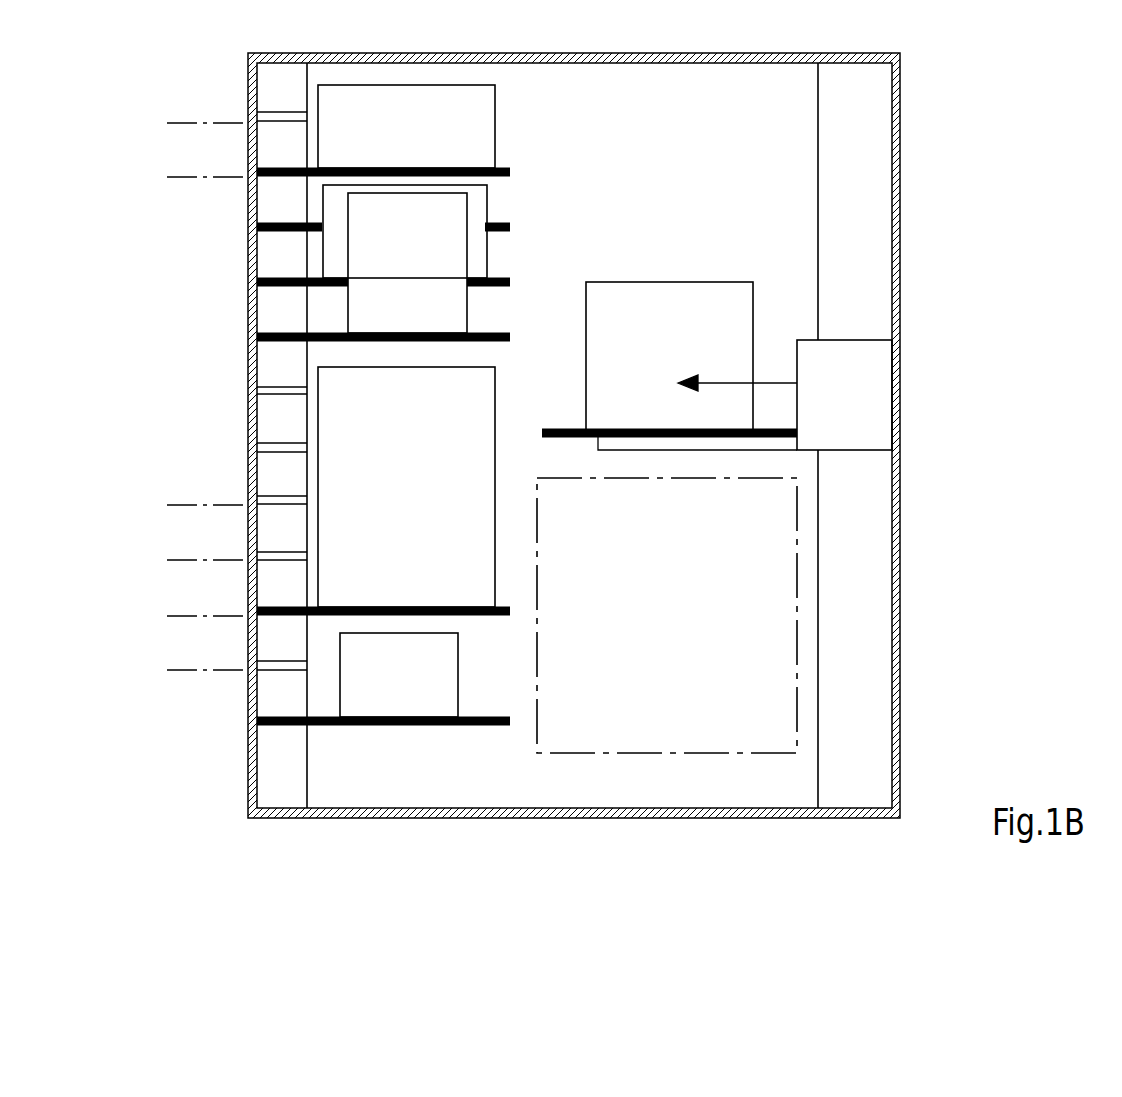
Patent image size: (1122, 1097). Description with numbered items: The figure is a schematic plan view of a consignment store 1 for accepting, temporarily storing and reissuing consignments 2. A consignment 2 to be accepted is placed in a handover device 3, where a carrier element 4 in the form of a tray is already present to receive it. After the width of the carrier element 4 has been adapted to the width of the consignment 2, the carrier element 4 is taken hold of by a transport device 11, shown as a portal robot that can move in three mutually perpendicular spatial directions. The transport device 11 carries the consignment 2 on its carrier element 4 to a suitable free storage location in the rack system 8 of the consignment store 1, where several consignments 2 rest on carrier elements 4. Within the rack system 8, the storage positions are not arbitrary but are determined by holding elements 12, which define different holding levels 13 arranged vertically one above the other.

The consignment store 1 is at (952, 118).
The consignment 2 is at (397, 142).
The handover device 3 is at (658, 629).
The carrier element 4 is at (499, 278).
The rack system 8 is at (537, 167).
The transport device 11 is at (833, 409).
The holding element 12 is at (272, 288).
The holding level 13 is at (177, 123).